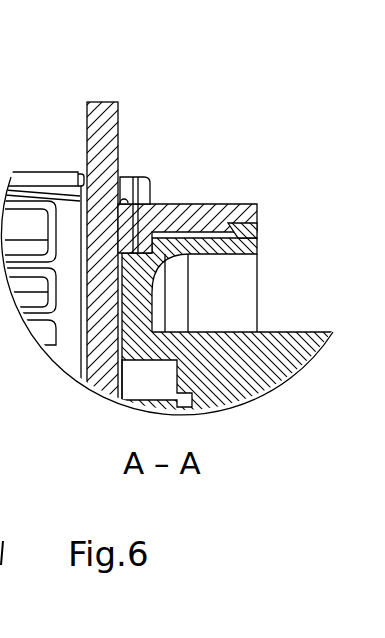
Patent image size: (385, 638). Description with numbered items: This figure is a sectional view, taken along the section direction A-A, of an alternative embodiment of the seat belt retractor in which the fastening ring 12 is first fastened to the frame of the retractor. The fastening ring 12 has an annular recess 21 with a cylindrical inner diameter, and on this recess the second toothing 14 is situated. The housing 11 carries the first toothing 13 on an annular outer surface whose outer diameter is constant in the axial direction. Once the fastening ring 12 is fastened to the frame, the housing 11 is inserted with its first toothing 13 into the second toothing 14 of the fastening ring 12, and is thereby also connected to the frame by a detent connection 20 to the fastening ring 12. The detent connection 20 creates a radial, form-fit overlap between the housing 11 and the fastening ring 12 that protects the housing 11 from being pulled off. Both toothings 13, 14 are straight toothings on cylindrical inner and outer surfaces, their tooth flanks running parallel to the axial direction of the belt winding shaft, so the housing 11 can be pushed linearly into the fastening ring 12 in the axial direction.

The housing 11 is at (289, 350).
The fastening ring 12 is at (212, 214).
The first toothing 13 is at (59, 257).
The second toothing 14 is at (142, 250).
The detent connection 20 is at (238, 223).
The annular recess 21 is at (136, 243).